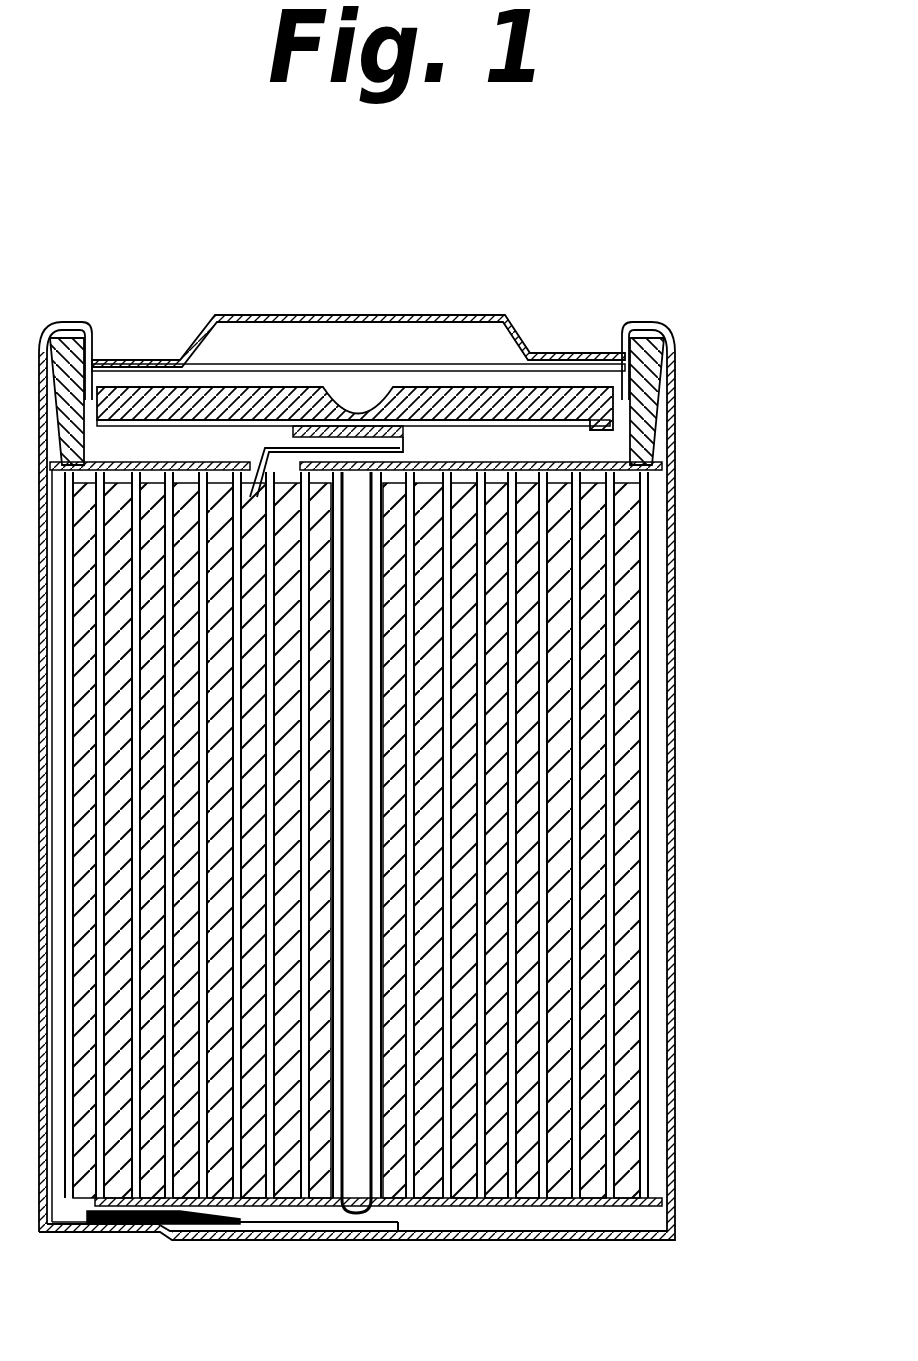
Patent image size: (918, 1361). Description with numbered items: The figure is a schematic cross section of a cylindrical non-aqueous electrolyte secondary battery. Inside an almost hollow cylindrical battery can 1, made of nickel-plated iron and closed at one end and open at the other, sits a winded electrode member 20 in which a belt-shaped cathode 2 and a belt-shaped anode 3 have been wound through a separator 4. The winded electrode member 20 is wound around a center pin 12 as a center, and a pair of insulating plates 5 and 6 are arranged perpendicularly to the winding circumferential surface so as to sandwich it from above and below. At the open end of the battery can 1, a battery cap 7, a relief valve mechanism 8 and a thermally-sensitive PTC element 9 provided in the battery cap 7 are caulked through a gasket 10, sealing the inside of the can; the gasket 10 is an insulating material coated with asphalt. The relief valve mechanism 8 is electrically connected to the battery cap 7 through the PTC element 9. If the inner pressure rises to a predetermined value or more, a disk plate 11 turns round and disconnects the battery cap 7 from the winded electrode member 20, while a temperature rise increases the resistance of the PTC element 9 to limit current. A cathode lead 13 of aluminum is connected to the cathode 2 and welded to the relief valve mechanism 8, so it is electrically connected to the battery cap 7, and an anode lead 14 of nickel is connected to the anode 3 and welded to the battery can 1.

The battery can 1 is at (676, 542).
The cathode 2 is at (593, 752).
The anode 3 is at (637, 790).
The separator 4 is at (613, 842).
The insulating plate 5 is at (656, 470).
The insulating plate 6 is at (672, 1202).
The battery cap 7 is at (340, 316).
The relief valve mechanism 8 is at (480, 378).
The PTC element 9 is at (665, 369).
The gasket 10 is at (634, 418).
The disk plate 11 is at (445, 385).
The center pin 12 is at (356, 918).
The cathode lead 13 is at (300, 390).
The anode lead 14 is at (211, 1242).
The winded electrode member 20 is at (423, 842).